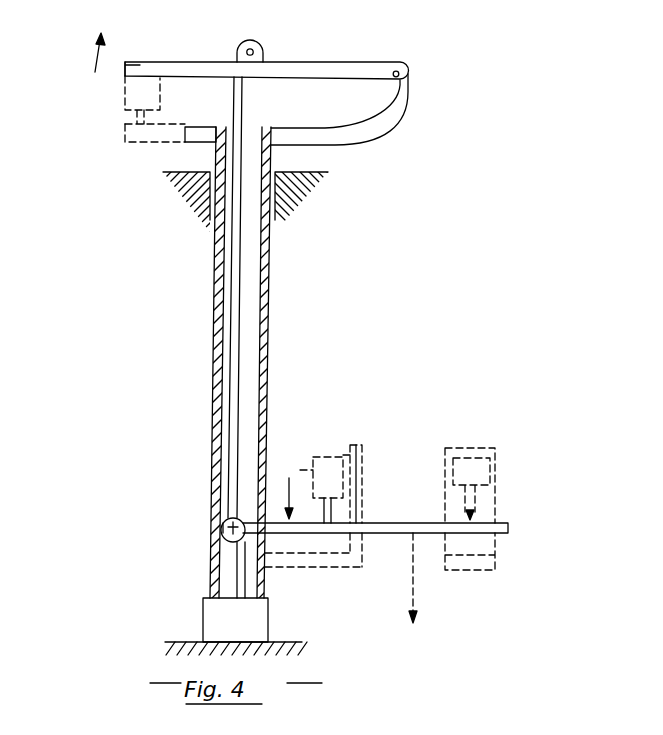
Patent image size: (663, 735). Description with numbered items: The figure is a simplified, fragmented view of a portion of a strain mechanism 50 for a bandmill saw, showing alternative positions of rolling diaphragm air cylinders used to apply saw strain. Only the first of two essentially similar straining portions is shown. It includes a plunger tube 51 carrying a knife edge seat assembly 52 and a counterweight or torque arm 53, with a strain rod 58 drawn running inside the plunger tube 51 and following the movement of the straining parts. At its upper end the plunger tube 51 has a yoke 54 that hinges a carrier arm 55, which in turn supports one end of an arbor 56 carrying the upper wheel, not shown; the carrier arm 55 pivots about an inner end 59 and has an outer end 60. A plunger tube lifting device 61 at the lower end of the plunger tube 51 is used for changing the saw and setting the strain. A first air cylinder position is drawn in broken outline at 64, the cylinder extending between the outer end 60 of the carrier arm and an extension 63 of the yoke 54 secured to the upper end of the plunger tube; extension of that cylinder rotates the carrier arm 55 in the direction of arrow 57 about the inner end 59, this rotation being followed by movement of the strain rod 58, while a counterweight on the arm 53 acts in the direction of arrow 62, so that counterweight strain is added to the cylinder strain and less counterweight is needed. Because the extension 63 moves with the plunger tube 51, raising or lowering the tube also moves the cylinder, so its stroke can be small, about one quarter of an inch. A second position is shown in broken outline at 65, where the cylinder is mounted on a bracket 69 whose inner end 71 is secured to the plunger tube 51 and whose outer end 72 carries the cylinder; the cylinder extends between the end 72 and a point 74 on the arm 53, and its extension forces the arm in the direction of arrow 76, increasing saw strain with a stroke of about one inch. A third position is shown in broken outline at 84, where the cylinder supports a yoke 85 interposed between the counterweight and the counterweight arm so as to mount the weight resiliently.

The strain mechanism 50 is at (301, 297).
The plunger tube 51 is at (266, 365).
The knife edge seat assembly 52 is at (212, 531).
The counterweight or torque arm 53 is at (414, 502).
The yoke 54 is at (393, 114).
The carrier arm 55 is at (341, 38).
The arbor 56 is at (249, 41).
The arrow 57 is at (95, 70).
The rod 58 is at (226, 326).
The inner end 59 is at (378, 62).
The outer end 60 is at (167, 48).
The plunger tube lifting device 61 is at (212, 622).
The arrow 62 is at (412, 568).
The extension 63 is at (128, 139).
The air cylinder in first position 64 is at (128, 95).
The air cylinder in second position 65 is at (314, 462).
The bracket 69 is at (366, 480).
The inner end of bracket 71 is at (275, 568).
The outer end of bracket 72 is at (366, 455).
The point on arm 74 is at (327, 545).
The arrow 76 is at (300, 483).
The air cylinder in third position 84 is at (505, 476).
The yoke 85 is at (497, 499).